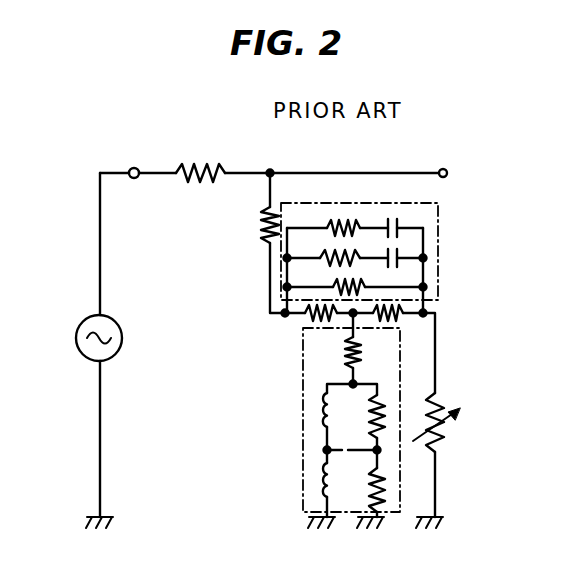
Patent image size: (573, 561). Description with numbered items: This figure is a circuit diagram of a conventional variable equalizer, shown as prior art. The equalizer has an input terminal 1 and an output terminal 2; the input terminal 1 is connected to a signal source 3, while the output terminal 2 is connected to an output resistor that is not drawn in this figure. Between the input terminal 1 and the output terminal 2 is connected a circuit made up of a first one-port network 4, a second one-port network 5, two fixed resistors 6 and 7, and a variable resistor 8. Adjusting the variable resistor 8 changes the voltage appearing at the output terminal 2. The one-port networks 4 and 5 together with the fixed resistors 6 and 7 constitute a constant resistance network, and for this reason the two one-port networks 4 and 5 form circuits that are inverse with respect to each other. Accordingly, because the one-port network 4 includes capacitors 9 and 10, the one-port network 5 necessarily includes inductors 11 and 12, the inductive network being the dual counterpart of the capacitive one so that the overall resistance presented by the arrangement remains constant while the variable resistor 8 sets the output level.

The input terminal 1 is at (135, 167).
The output terminal 2 is at (447, 173).
The signal source 3 is at (78, 332).
The one-port network 4 is at (381, 246).
The one-port network 5 is at (323, 418).
The fixed resistor 6 is at (303, 319).
The fixed resistor 7 is at (405, 319).
The variable resistor 8 is at (439, 443).
The capacitor 9 is at (397, 226).
The capacitor 10 is at (402, 264).
The inductor 11 is at (318, 412).
The inductor 12 is at (318, 484).